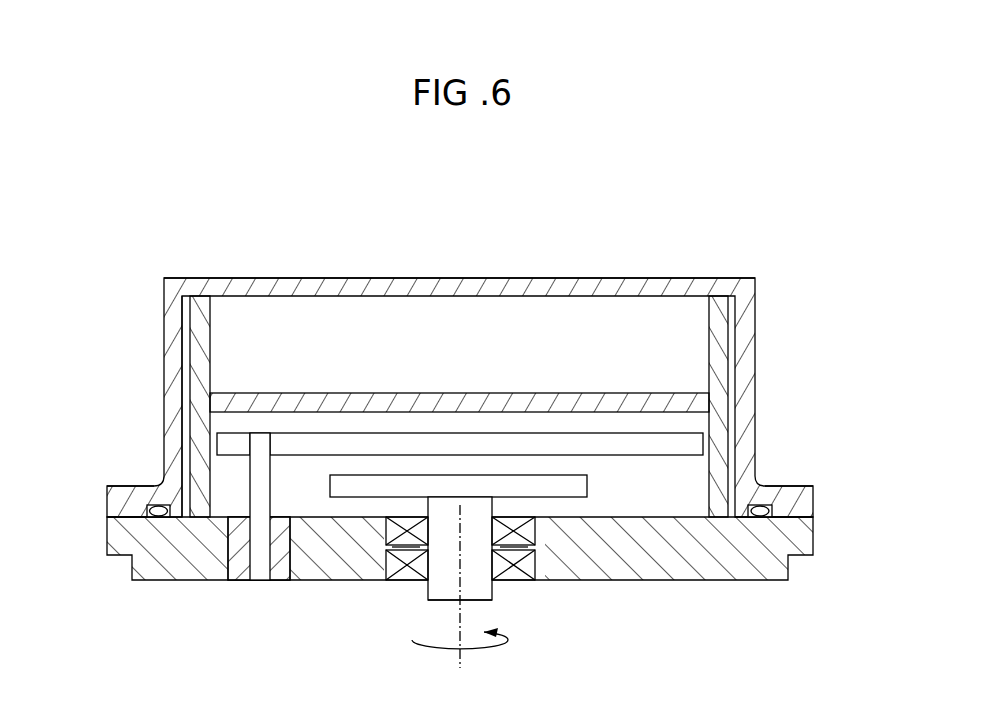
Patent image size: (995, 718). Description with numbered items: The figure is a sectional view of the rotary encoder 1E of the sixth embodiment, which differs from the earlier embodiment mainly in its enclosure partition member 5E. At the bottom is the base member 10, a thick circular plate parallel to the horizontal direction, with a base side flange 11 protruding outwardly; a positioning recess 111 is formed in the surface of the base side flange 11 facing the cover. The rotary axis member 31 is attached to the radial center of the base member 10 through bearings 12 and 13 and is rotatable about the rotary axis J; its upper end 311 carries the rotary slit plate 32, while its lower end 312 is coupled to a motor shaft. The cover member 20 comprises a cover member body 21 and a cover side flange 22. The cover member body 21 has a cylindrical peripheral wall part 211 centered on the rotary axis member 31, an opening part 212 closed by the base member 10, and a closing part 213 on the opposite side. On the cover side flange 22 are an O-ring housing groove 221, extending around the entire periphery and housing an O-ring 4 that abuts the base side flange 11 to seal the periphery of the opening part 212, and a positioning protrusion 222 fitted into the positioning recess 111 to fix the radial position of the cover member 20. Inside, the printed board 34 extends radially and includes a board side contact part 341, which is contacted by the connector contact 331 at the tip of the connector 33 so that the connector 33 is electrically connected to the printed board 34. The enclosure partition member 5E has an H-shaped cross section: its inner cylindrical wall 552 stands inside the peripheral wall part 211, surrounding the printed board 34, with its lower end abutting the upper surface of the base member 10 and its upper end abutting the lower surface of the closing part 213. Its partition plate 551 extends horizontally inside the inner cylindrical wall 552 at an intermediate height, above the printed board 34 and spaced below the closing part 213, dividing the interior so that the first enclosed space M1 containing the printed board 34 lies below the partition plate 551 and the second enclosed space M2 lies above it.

The rotary encoder 1E is at (778, 220).
The base member 10 is at (766, 598).
The base side flange 11 is at (107, 543).
The positioning recess 111 is at (133, 517).
The bearing 12 is at (384, 535).
The bearing 13 is at (384, 575).
The cover member 20 is at (92, 410).
The cover member body 21 is at (172, 413).
The cylindrical peripheral wall part 211 is at (183, 397).
The opening part 212 is at (737, 517).
The closing part 213 is at (482, 279).
The cover side flange 22 is at (152, 484).
The O-ring housing groove 221 is at (150, 517).
The positioning protrusion 222 is at (130, 525).
The rotary axis member 31 is at (428, 590).
The upper end 311 is at (540, 518).
The lower end 312 is at (438, 603).
The rotary slit plate 32 is at (588, 490).
The connector 33 is at (233, 582).
The connector contact 331 is at (285, 452).
The printed board 34 is at (652, 456).
The board side contact part 341 is at (263, 445).
The O-ring 4 is at (160, 517).
The enclosure partition member 5E is at (280, 386).
The partition plate 551 is at (373, 395).
The inner cylindrical wall 552 is at (195, 368).
The first enclosed space M1 is at (617, 422).
The second enclosed space M2 is at (578, 330).
The rotary axis J is at (462, 655).